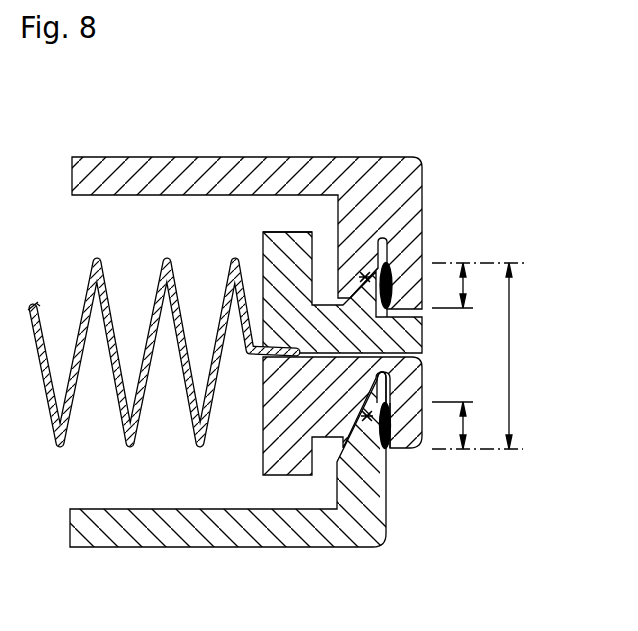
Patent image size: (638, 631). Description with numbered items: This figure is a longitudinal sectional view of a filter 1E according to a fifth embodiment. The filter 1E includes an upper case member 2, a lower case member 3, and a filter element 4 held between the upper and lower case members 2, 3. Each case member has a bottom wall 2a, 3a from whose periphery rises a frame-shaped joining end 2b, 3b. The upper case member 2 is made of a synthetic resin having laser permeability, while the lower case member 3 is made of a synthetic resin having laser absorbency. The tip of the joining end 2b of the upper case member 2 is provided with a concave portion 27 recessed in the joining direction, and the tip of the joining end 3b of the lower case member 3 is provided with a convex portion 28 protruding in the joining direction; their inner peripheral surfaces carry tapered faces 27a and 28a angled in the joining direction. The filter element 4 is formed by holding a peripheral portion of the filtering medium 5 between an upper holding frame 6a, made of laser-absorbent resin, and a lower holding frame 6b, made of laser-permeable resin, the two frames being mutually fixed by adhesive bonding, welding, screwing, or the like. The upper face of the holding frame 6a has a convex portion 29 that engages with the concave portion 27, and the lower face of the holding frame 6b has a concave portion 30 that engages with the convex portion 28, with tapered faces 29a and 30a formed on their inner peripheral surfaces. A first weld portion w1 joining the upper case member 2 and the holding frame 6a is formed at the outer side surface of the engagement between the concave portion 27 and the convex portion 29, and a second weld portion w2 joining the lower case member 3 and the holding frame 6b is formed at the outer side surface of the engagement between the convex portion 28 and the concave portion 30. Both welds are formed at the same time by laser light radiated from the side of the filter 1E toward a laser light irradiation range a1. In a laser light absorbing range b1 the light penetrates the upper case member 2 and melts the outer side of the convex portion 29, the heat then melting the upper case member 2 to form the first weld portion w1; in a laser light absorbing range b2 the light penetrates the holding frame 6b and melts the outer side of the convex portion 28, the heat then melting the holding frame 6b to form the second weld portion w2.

The filter 1E is at (507, 173).
The upper case member 2 is at (256, 199).
The bottom wall 2a is at (125, 167).
The joining end 2b is at (415, 206).
The lower case member 3 is at (251, 488).
The bottom wall 3a is at (167, 535).
The joining end 3b is at (362, 504).
The filter element 4 is at (311, 222).
The filtering medium 5 is at (108, 266).
The upper holding frame 6a is at (278, 231).
The lower holding frame 6b is at (263, 442).
The concave portion 27 is at (360, 271).
The tapered face 27a is at (362, 277).
The convex portion 28 is at (372, 434).
The tapered face 28a is at (366, 418).
The convex portion 29 is at (379, 262).
The tapered face 29a is at (362, 277).
The concave portion 30 is at (383, 405).
The tapered face 30a is at (366, 418).
The laser light irradiation range a1 is at (512, 338).
The laser light absorbing range b1 is at (468, 279).
The laser light absorbing range b2 is at (465, 428).
The first weld portion w1 is at (395, 292).
The second weld portion w2 is at (423, 390).